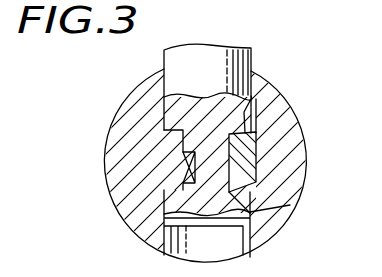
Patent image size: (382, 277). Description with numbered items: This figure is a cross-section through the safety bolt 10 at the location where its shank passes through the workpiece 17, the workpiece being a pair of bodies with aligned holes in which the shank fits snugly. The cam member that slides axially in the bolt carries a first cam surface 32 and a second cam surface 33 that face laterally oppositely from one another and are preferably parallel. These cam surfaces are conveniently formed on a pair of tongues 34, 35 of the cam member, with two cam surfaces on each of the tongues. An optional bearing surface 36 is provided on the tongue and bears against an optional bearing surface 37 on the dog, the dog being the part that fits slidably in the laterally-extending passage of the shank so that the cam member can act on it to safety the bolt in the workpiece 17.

The safety bolt 10 is at (293, 103).
The workpiece 17 is at (191, 138).
The first cam surface 32 is at (256, 96).
The second cam surface 33 is at (235, 197).
The tongue 34 is at (274, 139).
The tongue 35 is at (190, 133).
The bearing surface 36 is at (152, 166).
The bearing surface 37 is at (164, 222).